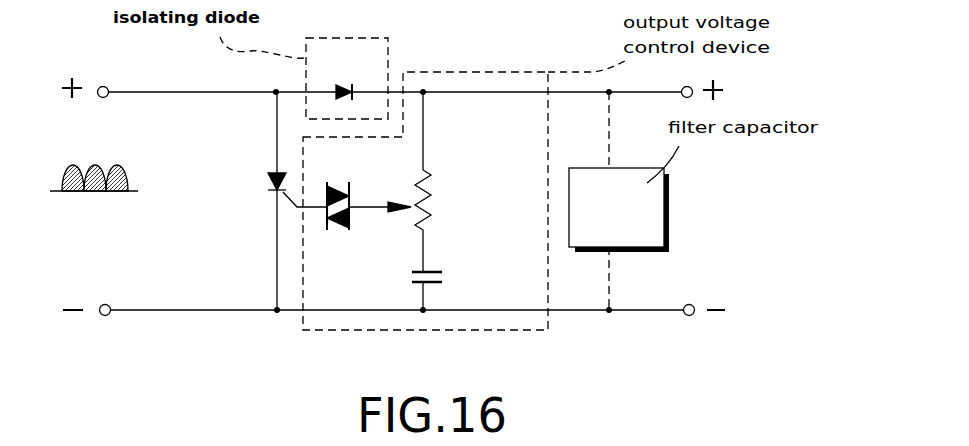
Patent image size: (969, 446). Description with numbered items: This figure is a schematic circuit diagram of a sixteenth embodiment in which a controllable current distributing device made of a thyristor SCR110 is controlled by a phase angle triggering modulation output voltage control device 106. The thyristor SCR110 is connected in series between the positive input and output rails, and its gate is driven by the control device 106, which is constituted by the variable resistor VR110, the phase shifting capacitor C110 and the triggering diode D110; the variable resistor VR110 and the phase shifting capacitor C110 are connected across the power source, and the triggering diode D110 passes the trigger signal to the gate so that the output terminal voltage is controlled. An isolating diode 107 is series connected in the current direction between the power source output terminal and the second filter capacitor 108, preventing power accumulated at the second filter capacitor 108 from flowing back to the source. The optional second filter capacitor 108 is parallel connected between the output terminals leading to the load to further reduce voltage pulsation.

The isolating diode 107 is at (347, 78).
The output voltage control device 106 is at (465, 72).
The second filter capacitor 108 is at (619, 201).
The thyristor SCR110 is at (237, 201).
The triggering diode D110 is at (361, 185).
The variable resistor VR110 is at (473, 182).
The phase shifting capacitor C110 is at (469, 285).